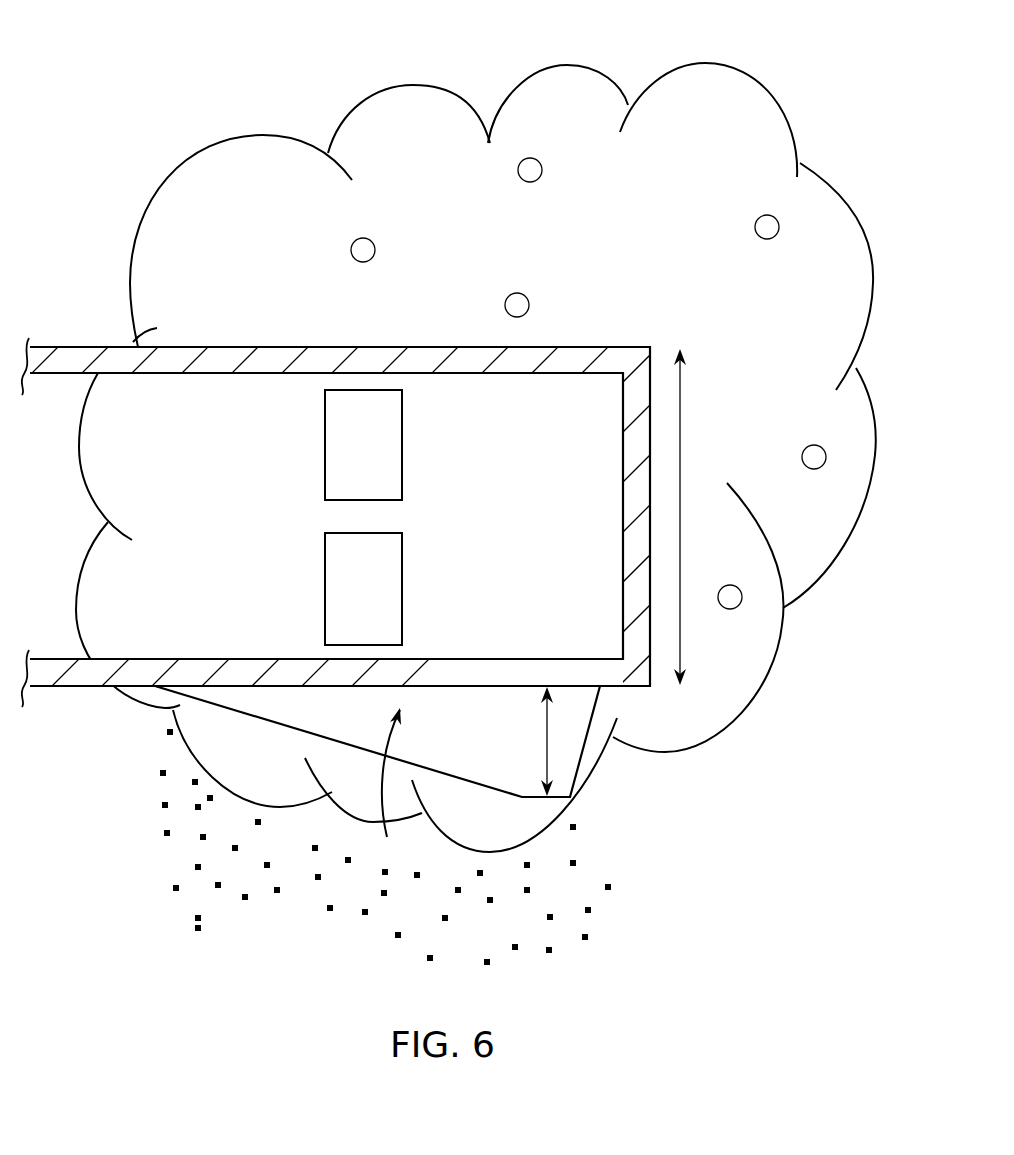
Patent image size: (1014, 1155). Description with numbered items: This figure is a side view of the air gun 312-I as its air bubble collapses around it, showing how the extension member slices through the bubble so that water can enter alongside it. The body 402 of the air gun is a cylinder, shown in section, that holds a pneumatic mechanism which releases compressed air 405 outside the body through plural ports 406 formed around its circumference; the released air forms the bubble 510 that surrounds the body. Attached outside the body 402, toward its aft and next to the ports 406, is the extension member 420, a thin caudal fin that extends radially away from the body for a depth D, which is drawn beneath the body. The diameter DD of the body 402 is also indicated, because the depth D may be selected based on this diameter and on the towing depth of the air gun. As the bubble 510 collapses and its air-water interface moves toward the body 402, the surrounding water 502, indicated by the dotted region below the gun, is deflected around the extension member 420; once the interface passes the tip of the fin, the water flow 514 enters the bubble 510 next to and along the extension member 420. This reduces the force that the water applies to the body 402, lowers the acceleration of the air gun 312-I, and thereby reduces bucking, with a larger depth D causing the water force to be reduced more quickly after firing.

The collapsing bubble 510 is at (245, 178).
The compressed air 405 is at (826, 457).
The air gun 312-I is at (507, 526).
The body 402 is at (97, 670).
The ports 406 is at (355, 580).
The diameter of the body DD is at (680, 517).
The extension member 420 is at (565, 742).
The depth D is at (545, 742).
The water flow 514 is at (377, 790).
The water 502 is at (170, 887).